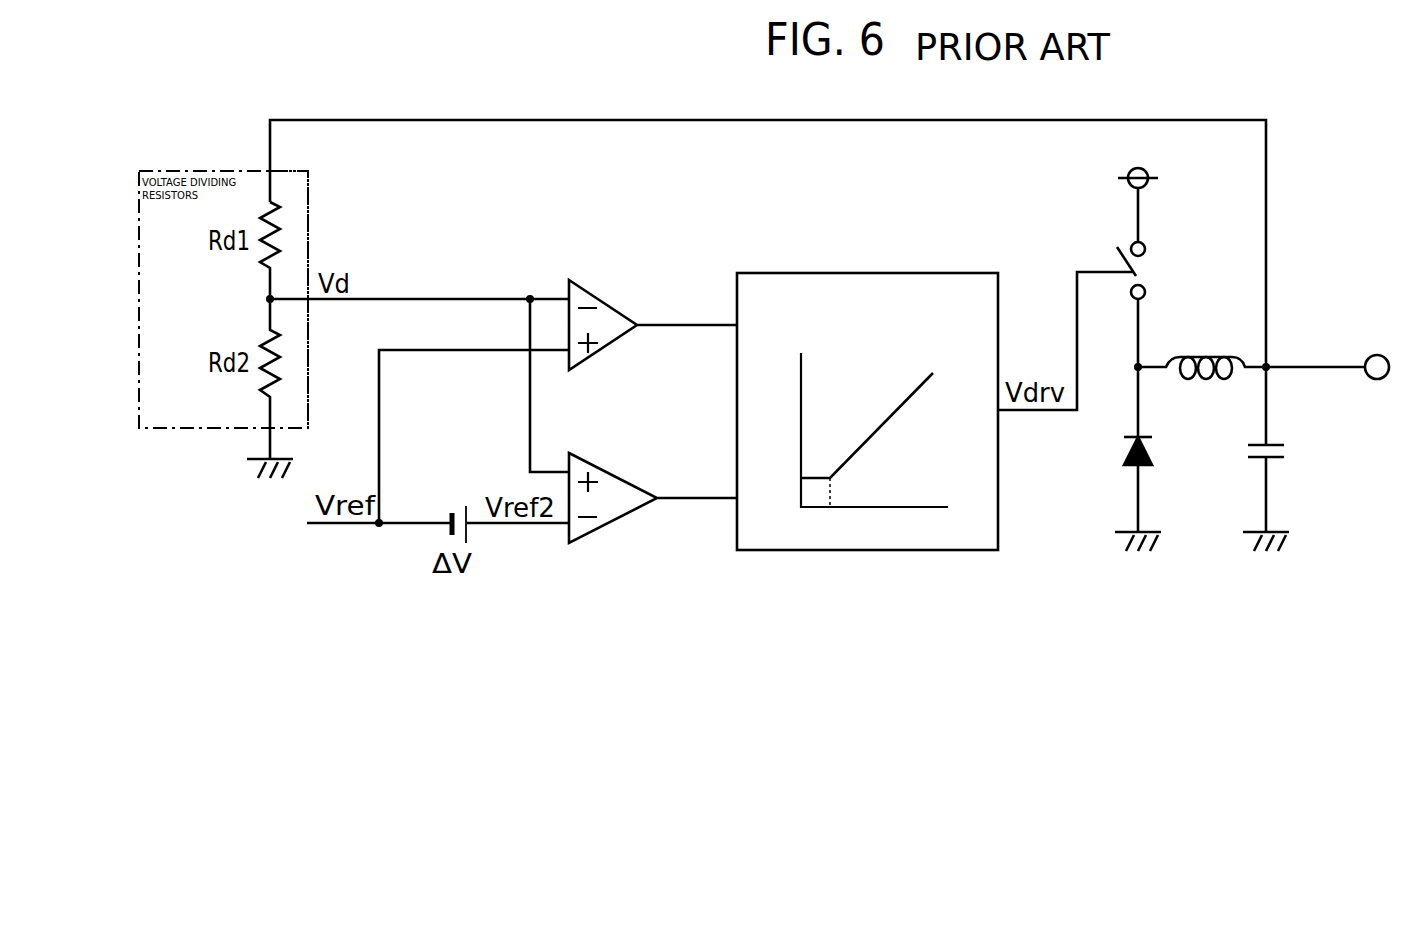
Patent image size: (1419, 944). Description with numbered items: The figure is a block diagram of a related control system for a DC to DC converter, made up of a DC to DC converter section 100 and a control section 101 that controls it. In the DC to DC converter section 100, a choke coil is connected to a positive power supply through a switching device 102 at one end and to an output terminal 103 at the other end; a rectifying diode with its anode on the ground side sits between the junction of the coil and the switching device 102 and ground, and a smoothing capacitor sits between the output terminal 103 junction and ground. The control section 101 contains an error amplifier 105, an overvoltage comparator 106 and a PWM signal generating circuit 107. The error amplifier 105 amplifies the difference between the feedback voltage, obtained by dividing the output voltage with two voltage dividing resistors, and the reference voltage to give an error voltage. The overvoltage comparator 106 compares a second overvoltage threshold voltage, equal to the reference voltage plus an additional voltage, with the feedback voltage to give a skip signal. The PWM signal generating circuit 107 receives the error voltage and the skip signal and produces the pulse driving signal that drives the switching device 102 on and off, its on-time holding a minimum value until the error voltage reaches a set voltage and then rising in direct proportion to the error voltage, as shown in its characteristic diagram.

The DC to DC converter section 100 is at (1212, 296).
The control section 101 is at (652, 217).
The switching device 102 is at (1118, 253).
The output terminal 103 is at (1378, 355).
The error amplifier 105 is at (620, 346).
The overvoltage comparator 106 is at (620, 520).
The pulse-width modulation (PWM) signal generating circuit 107 is at (886, 272).